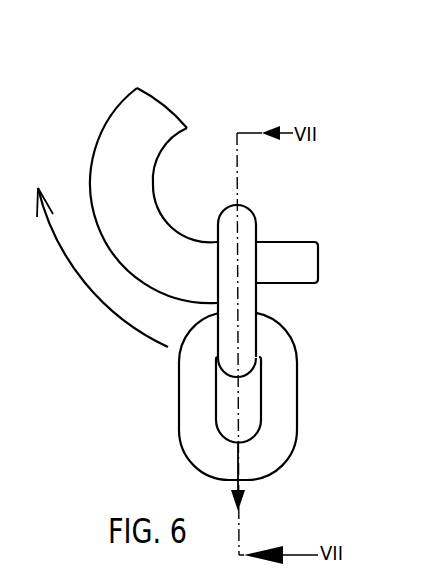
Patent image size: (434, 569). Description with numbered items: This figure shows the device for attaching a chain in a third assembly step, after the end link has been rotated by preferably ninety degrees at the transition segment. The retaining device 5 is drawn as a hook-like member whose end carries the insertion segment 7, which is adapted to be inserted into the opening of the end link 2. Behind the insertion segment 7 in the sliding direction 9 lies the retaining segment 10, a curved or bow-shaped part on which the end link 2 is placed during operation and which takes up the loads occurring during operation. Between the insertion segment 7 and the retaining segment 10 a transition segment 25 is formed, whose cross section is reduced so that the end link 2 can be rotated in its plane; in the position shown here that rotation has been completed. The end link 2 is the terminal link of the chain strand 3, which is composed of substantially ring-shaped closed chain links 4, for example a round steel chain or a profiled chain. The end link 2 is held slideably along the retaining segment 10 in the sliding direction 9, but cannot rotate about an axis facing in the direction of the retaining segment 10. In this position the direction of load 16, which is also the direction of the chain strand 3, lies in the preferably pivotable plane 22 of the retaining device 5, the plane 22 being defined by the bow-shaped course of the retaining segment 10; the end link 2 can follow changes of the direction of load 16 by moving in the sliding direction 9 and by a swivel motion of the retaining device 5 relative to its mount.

The end link 2 is at (247, 297).
The chain strand 3 is at (308, 381).
The chain links 4 is at (287, 407).
The retaining device 5 is at (205, 119).
The insertion segment 7 is at (314, 225).
The sliding direction 9 is at (88, 294).
The retaining segment 10 is at (95, 157).
The direction of load 16 is at (243, 487).
The plane of the retaining device 22 is at (193, 186).
The transition segment 25 is at (263, 235).